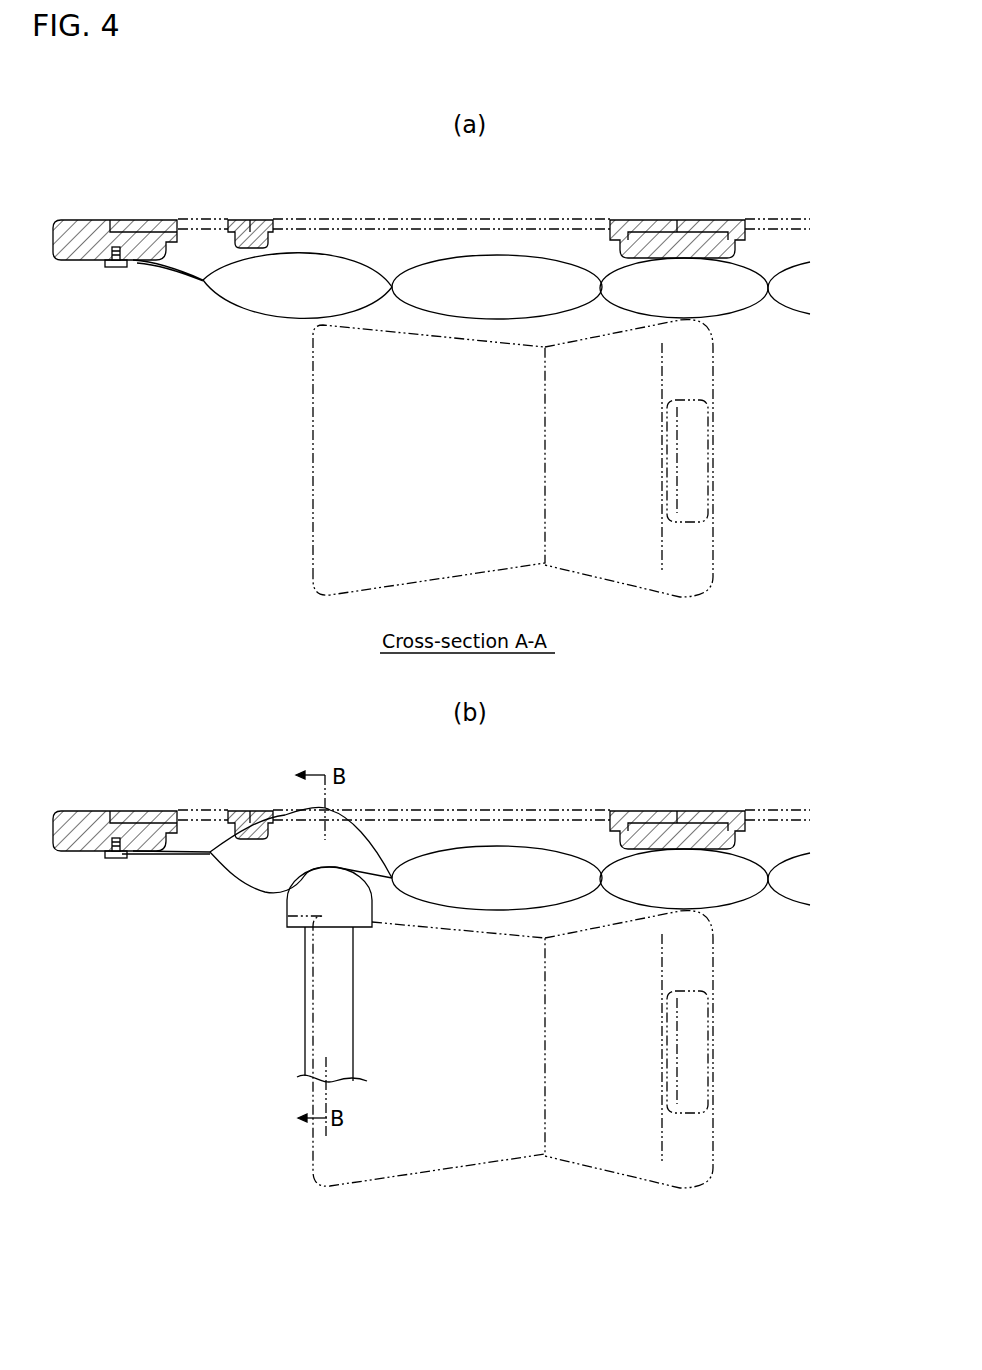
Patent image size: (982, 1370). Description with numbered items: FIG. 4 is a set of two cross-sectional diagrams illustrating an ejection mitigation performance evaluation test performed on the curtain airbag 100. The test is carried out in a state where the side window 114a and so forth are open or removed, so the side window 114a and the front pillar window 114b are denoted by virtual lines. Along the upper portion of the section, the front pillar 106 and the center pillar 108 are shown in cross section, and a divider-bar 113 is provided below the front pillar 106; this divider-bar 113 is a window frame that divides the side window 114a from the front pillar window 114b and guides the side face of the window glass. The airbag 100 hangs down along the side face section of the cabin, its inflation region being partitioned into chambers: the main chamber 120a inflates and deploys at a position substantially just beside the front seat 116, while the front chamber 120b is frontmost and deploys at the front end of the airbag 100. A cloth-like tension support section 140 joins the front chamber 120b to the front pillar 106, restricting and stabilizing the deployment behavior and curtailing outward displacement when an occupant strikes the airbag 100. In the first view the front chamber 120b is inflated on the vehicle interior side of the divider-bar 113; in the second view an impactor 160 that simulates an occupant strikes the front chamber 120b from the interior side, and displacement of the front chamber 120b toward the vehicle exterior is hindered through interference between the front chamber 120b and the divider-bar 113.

The airbag 100 is at (760, 343).
The front pillar 106 is at (103, 220).
The center pillar 108 is at (675, 233).
The divider-bar 113 is at (240, 221).
The side window 114a is at (458, 218).
The front pillar window 114b is at (187, 218).
The front seat 116 is at (710, 548).
The main chamber 120a is at (493, 320).
The front chamber 120b is at (273, 323).
The tension support section 140 is at (150, 268).
The impactor 160 is at (310, 963).